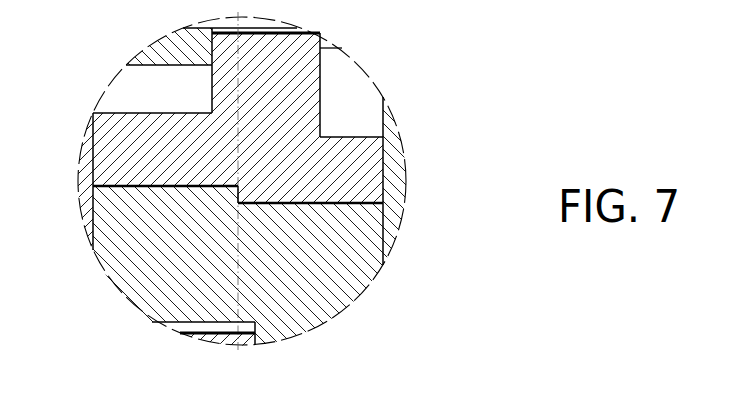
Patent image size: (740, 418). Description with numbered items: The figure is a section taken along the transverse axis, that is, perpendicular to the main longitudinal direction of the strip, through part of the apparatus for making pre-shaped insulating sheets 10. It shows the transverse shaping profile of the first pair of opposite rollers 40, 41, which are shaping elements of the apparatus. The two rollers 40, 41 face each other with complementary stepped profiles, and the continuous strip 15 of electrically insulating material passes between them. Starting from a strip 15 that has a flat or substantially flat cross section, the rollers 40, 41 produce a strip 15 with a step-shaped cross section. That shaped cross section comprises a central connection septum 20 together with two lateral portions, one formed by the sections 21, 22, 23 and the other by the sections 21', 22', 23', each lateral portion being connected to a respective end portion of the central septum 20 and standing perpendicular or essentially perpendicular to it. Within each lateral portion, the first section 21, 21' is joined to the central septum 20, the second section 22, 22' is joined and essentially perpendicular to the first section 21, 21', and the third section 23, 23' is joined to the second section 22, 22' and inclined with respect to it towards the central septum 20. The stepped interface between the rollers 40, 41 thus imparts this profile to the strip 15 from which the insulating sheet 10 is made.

The pre-shaped insulating sheet 10 is at (226, 199).
The strip 15 is at (130, 193).
The central connection septum 20 is at (241, 197).
The first section 21 is at (129, 97).
The second section 22 is at (129, 97).
The third section 23 is at (129, 97).
The first section 21' is at (218, 304).
The second section 22' is at (218, 304).
The third section 23' is at (218, 304).
The roller 40 is at (98, 119).
The roller 41 is at (348, 308).